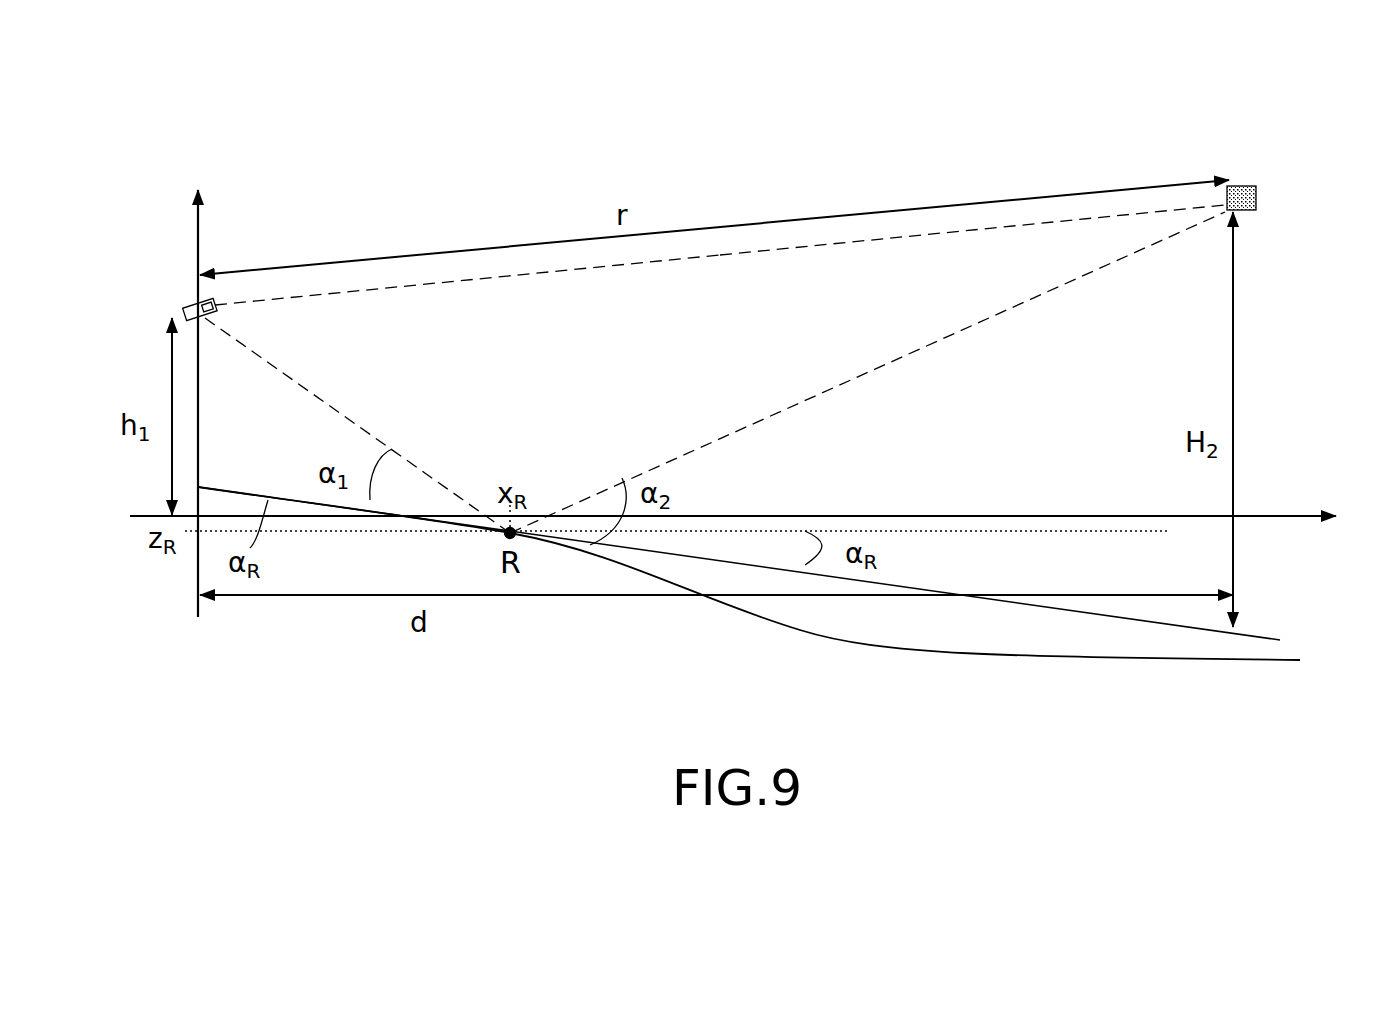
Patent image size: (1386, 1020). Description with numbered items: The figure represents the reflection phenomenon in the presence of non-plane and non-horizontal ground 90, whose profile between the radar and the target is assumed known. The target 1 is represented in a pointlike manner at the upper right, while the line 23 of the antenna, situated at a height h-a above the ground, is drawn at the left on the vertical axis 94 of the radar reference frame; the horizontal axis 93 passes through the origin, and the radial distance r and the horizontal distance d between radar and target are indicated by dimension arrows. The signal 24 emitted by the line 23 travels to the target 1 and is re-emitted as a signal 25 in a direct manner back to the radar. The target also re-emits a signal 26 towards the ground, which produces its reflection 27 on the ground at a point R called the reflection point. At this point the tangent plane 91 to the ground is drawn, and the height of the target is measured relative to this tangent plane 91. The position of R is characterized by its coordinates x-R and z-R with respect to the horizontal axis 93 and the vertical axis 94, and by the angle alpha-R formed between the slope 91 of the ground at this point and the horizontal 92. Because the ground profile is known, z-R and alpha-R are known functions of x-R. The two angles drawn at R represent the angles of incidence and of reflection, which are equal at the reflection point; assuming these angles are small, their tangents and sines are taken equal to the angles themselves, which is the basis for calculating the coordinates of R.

The target 1 is at (1257, 200).
The line of the antenna 23 is at (183, 315).
The emitted signal 24 is at (538, 274).
The directly re-emitted signal 25 is at (787, 249).
The signal re-emitted towards the ground 26 is at (965, 326).
The ground reflection 27 is at (365, 426).
The ground 90 is at (980, 655).
The tangent plane 91 is at (1255, 637).
The horizontal 92 is at (1038, 516).
The horizontal axis 93 is at (1272, 516).
The vertical axis 94 is at (200, 232).